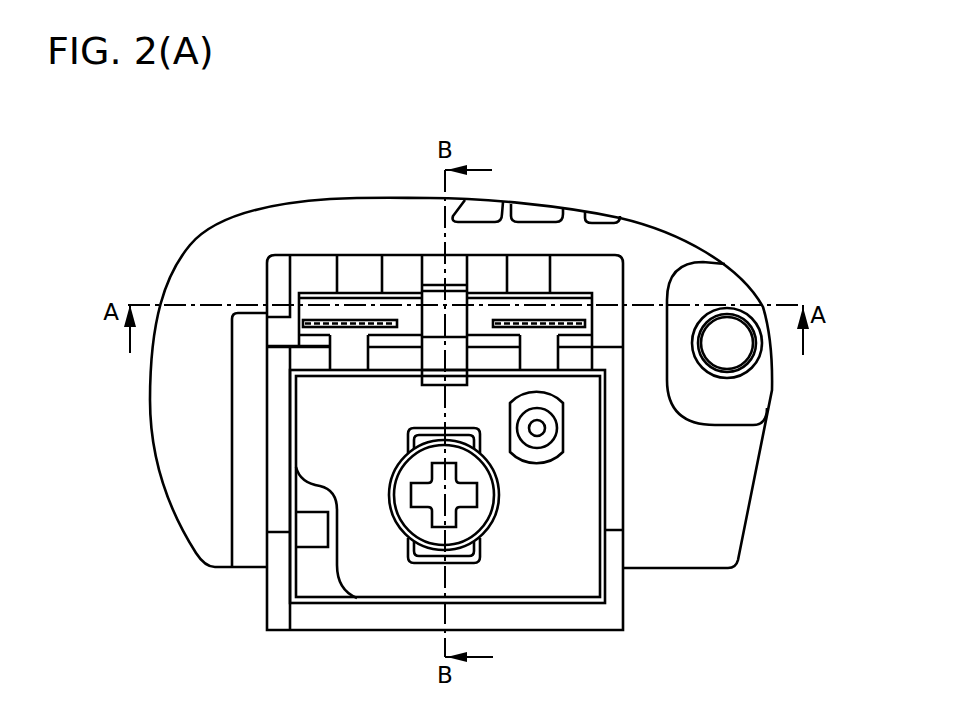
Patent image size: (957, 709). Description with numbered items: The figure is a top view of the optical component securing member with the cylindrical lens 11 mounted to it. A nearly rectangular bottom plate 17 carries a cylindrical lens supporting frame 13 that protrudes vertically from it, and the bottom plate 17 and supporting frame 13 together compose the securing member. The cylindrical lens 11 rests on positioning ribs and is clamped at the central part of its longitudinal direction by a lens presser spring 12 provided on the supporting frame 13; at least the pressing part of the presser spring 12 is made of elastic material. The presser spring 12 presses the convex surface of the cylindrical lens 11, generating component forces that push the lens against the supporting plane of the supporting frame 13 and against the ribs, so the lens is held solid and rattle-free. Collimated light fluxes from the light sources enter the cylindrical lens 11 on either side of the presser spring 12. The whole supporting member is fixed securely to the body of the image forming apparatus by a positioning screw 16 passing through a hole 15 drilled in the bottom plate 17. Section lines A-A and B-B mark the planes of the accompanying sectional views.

The cylindrical lens 11 is at (480, 313).
The presser spring 12 is at (428, 277).
The cylindrical lens supporting frame 13 is at (618, 484).
The hole 15 is at (480, 553).
The positioning screw 16 is at (417, 518).
The bottom plate 17 is at (577, 573).